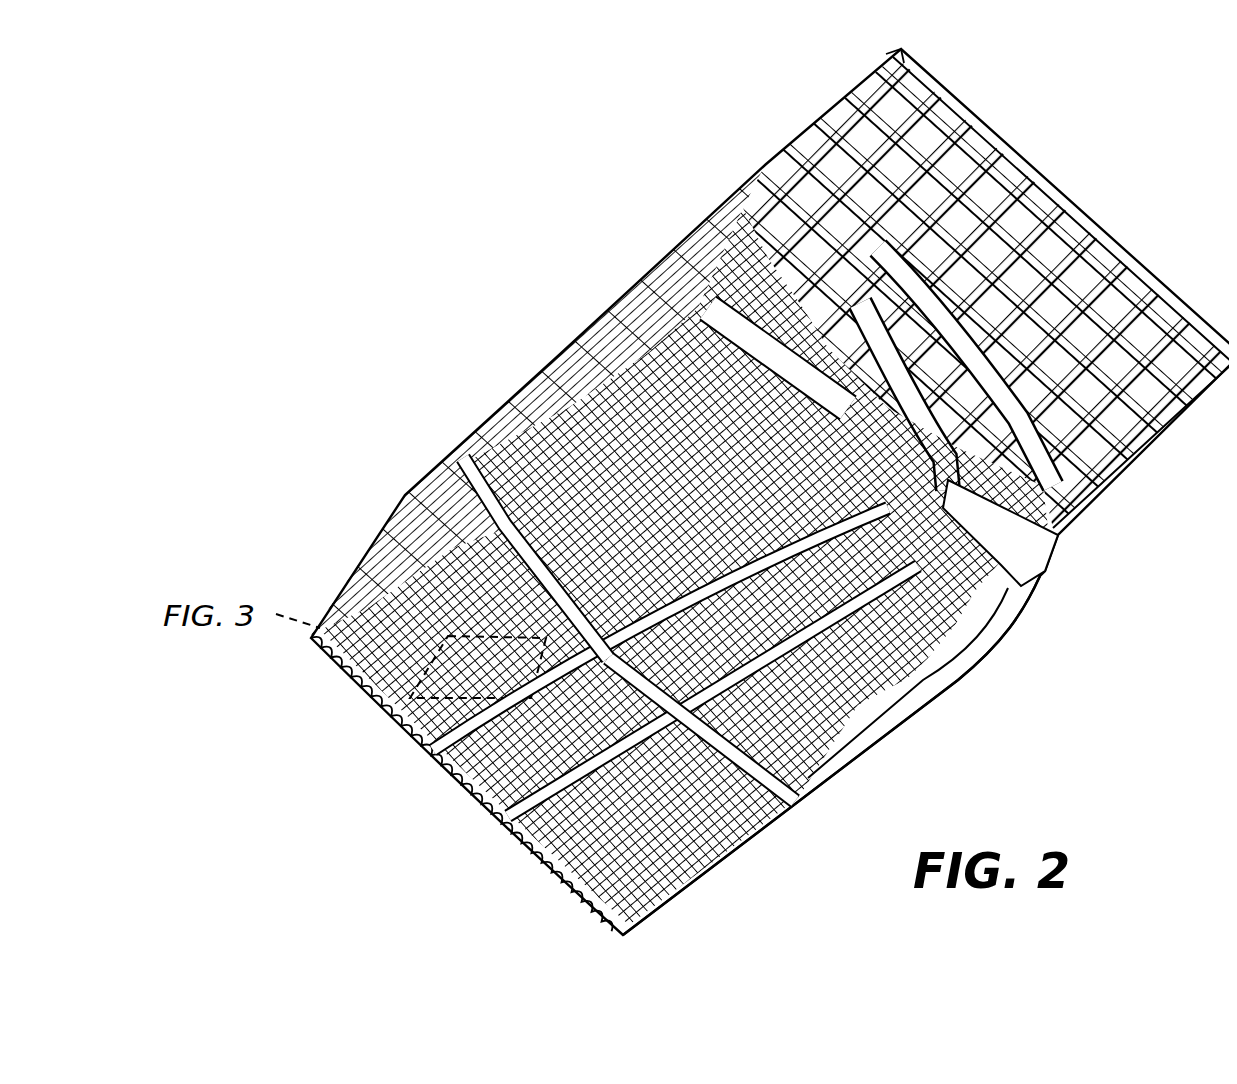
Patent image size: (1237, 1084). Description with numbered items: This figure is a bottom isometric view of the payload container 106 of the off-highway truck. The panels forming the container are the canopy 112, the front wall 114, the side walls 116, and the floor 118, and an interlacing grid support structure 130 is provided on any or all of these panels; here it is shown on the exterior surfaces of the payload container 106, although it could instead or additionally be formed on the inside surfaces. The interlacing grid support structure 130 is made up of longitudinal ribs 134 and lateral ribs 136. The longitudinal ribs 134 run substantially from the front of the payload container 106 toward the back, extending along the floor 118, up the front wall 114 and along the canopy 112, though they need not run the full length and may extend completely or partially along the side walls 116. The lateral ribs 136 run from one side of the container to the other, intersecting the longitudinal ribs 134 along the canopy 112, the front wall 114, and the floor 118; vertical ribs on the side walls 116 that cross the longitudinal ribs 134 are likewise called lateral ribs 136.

The payload container 106 is at (554, 254).
The canopy 112 is at (1178, 412).
The front wall 114 is at (1040, 520).
The side walls 116 is at (443, 472).
The floor 118 is at (480, 805).
The interlacing grid support structure 130 is at (877, 745).
The longitudinal ribs 134 is at (652, 390).
The lateral ribs 136 is at (900, 122).